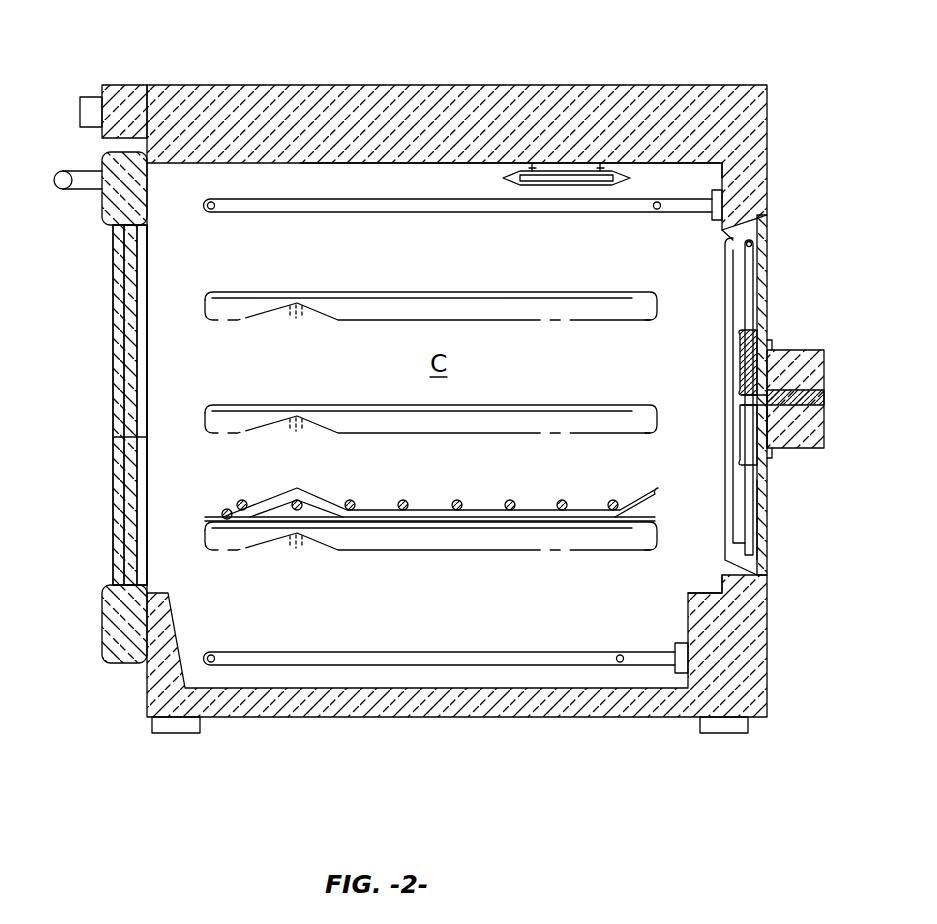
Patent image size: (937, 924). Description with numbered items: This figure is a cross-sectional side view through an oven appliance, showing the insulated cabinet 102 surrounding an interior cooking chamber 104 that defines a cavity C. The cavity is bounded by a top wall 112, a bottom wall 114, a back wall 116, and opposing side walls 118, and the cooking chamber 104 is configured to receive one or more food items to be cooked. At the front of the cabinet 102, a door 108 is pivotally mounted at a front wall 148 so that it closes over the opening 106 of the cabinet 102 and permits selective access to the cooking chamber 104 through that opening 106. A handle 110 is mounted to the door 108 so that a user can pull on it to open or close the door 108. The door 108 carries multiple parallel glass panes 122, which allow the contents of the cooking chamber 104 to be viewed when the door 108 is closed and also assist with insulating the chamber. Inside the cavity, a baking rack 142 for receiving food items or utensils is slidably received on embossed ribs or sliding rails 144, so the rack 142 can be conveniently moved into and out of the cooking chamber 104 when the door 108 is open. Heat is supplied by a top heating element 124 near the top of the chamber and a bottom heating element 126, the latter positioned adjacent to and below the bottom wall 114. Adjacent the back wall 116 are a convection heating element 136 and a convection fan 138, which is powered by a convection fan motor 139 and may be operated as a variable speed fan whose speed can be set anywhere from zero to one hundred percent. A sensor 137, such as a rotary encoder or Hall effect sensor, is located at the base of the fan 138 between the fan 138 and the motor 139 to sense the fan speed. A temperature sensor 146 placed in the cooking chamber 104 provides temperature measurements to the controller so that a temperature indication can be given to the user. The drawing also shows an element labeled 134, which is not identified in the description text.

The insulated cabinet 102 is at (291, 115).
The interior cooking chamber 104 is at (697, 280).
The opening 106 is at (113, 437).
The door 108 is at (122, 200).
The handle 110 is at (55, 183).
The top wall 112 is at (437, 178).
The bottom wall 114 is at (702, 585).
The back wall 116 is at (707, 178).
The side walls 118 is at (462, 269).
The glass panes 122 is at (143, 292).
The top heating element 124 is at (540, 202).
The bottom heating element 126 is at (388, 662).
The control element 134 is at (80, 112).
The convection heating element 136 is at (770, 500).
The sensor 137 is at (810, 350).
The convection fan 138 is at (757, 308).
The convection fan motor 139 is at (826, 432).
The baking rack 142 is at (635, 500).
The sliding rails 144 is at (525, 300).
The temperature sensor 146 is at (568, 175).
The front wall 148 is at (152, 78).